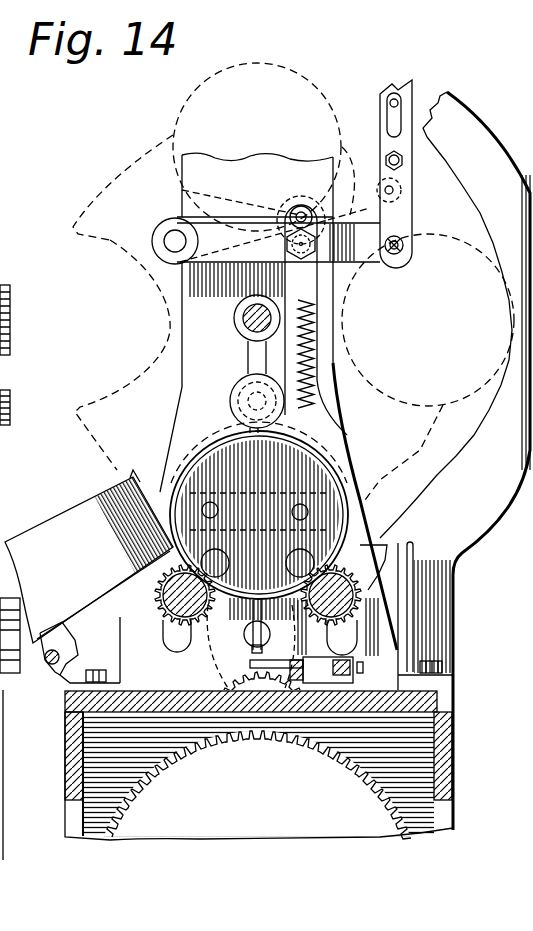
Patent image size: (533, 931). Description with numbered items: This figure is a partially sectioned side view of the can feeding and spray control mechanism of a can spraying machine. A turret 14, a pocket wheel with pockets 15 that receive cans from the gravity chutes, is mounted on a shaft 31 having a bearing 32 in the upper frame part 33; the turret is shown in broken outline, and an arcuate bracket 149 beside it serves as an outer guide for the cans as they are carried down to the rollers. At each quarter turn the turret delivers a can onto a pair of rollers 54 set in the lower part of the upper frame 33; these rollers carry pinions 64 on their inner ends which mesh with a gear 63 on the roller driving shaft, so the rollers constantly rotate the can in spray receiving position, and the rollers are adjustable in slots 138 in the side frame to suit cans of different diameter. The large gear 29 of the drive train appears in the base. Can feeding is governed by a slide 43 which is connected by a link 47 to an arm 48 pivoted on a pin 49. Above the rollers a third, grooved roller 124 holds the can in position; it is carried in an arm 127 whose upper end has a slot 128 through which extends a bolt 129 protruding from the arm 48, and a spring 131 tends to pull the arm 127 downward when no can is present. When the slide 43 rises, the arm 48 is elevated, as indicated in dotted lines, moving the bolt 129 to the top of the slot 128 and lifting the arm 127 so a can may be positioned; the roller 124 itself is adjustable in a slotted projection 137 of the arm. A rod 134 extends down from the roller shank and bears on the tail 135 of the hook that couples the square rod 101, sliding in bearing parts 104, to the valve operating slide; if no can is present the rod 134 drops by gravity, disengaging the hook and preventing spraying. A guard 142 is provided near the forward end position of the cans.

The turret 14 is at (414, 440).
The pocket 15 is at (100, 400).
The large gear 29 is at (430, 811).
The shaft 31 is at (248, 317).
The bearing 32 is at (2, 284).
The upper frame part 33 is at (207, 186).
The slide 43 is at (0, 101).
The link 47 is at (400, 225).
The arm 48 is at (350, 250).
The pin 49 is at (163, 258).
The roller 54 is at (157, 597).
The gear 63 is at (5, 681).
The pinion 64 is at (313, 593).
The square rod 101 is at (353, 660).
The bearing part 104 is at (37, 527).
The third roller 124 is at (247, 432).
The arm 127 is at (324, 366).
The slot 128 is at (301, 210).
The bolt 129 is at (301, 262).
The spring 131 is at (320, 330).
The rod 134 is at (240, 613).
The tail 135 is at (262, 650).
The slotted projection 137 is at (320, 437).
The slot 138 is at (343, 633).
The guard 142 is at (132, 476).
The arcuate bracket 149 is at (473, 513).